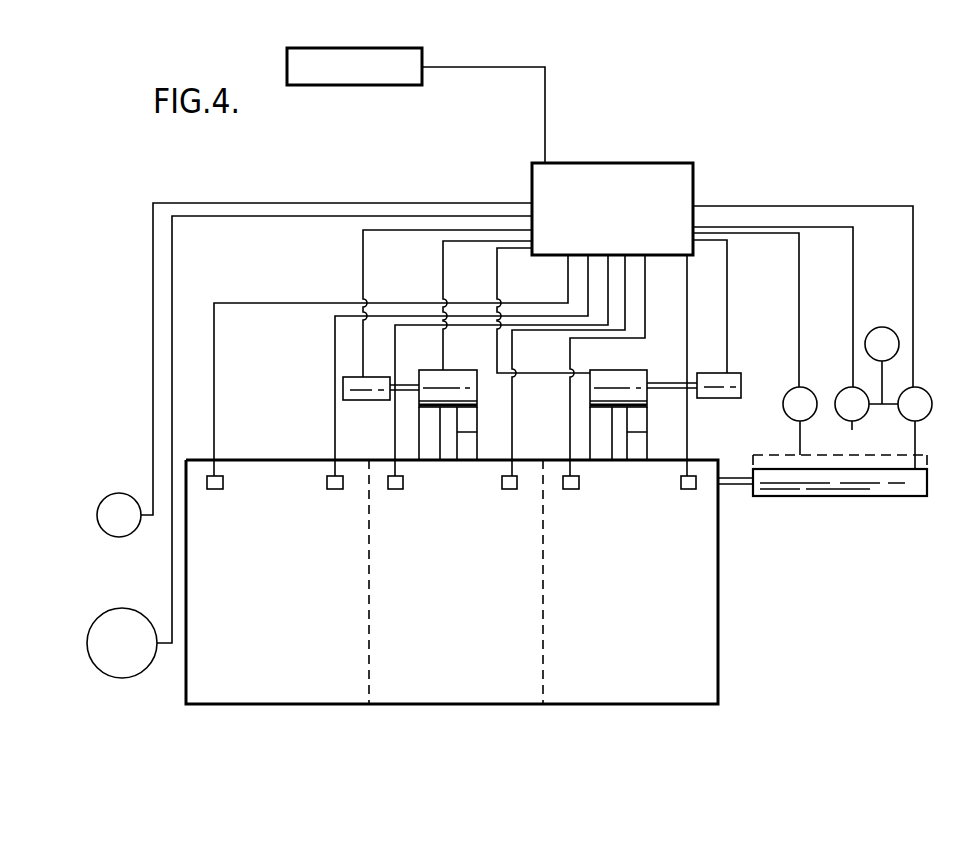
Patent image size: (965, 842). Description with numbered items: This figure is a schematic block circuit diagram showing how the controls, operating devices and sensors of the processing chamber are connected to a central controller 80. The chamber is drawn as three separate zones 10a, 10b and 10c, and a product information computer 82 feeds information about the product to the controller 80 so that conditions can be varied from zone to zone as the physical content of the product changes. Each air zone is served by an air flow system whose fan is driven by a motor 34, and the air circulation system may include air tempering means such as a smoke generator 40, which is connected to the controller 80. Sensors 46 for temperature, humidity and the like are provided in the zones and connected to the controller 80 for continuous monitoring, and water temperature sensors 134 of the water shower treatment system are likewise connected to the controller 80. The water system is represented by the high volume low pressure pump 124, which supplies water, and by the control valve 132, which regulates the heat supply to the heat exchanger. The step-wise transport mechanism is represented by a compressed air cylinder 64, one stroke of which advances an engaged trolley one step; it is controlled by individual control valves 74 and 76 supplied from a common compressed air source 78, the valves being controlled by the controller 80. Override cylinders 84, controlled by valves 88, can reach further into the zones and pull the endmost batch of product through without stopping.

The product information computer 82 is at (382, 85).
The central controller 80 is at (695, 168).
The motor 34 is at (364, 400).
The smoke generator 40 is at (434, 372).
The sensors 46 is at (511, 496).
The water temperature sensors 134 is at (253, 497).
The zone 10a is at (292, 627).
The zone 10b is at (473, 627).
The zone 10c is at (649, 627).
The control valve 132 is at (105, 536).
The high volume low pressure pump 124 is at (110, 678).
The valves 88 is at (783, 406).
The control valve 74 is at (840, 416).
The control valve 76 is at (926, 415).
The compressed air source 78 is at (882, 327).
The compressed air cylinder 64 is at (862, 496).
The override cylinders 84 is at (799, 464).